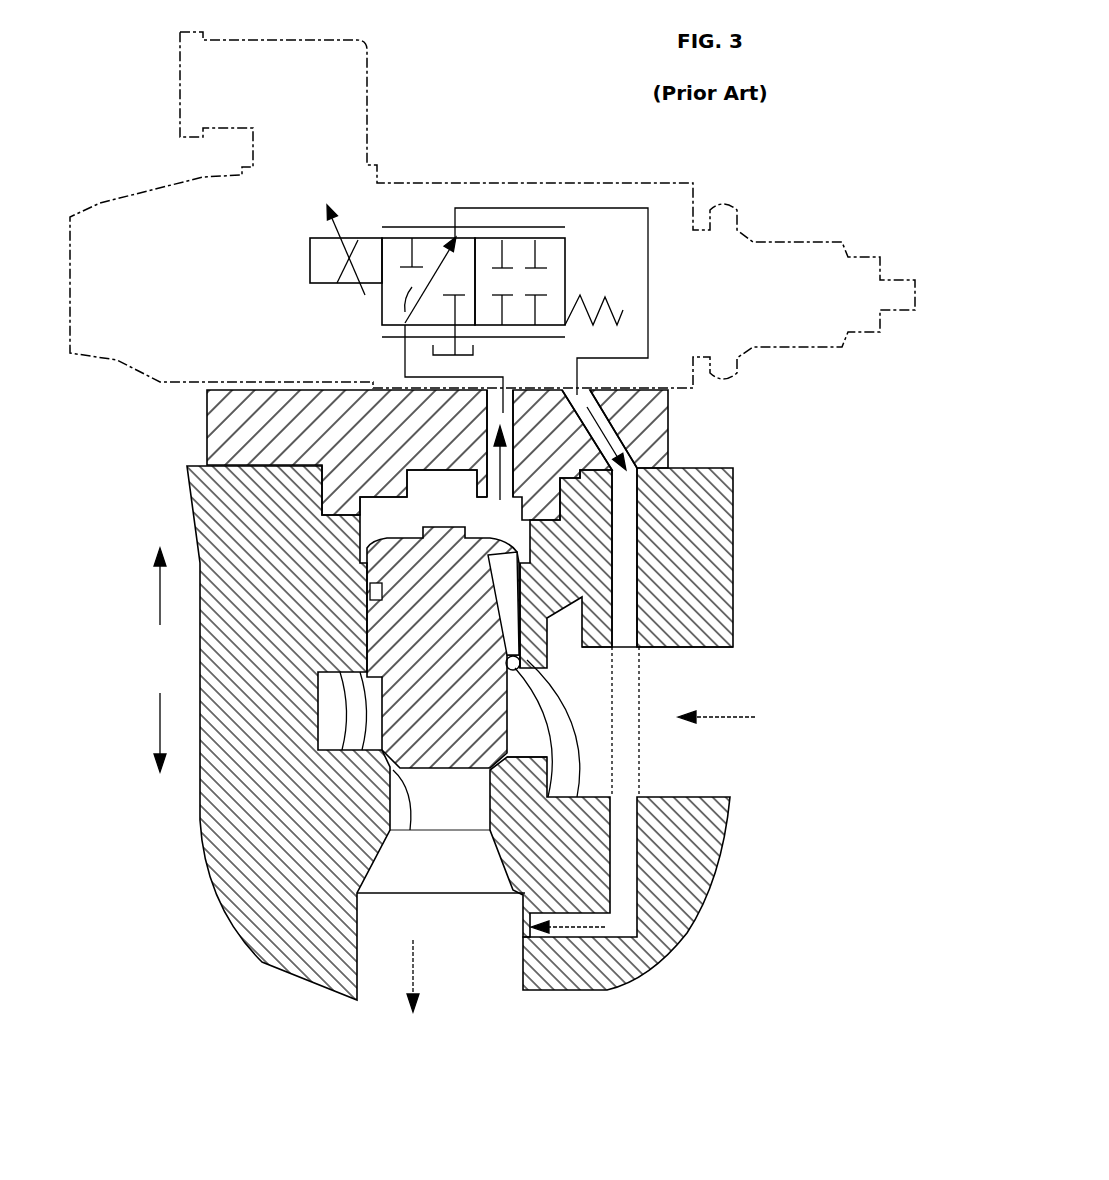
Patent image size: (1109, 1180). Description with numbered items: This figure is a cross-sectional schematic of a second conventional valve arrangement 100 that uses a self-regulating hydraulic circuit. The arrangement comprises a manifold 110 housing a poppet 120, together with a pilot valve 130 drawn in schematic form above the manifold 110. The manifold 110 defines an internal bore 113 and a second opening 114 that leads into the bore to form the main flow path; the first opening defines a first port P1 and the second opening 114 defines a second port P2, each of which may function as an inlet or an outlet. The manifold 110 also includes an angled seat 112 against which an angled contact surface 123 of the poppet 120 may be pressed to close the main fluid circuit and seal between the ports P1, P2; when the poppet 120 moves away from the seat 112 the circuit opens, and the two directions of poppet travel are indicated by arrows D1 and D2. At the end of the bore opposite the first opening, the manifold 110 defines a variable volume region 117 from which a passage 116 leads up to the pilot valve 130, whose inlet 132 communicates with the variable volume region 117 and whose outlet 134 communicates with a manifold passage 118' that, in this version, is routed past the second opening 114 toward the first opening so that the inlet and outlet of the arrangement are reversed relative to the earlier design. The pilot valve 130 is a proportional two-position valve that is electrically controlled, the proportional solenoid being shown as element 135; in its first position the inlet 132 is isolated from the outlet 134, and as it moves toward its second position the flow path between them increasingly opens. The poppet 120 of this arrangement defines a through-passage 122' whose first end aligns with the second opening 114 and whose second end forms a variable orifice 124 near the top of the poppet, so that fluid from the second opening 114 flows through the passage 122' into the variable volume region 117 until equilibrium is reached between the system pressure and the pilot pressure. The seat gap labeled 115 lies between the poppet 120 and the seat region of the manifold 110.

The valve arrangement 100 is at (760, 482).
The manifold 110 is at (283, 967).
The angled seat 112 is at (410, 830).
The internal bore 113 is at (368, 645).
The second opening 114 is at (522, 669).
The valve seat gap 115 is at (515, 577).
The passage 116 is at (496, 458).
The variable volume region 117 is at (456, 503).
The pilot passage 118' is at (666, 661).
The poppet 120 is at (460, 790).
The passage 122' is at (558, 728).
The angled contact surface 123 is at (500, 756).
The variable orifice 124 is at (492, 553).
The pilot valve 130 is at (425, 205).
The inlet 132 is at (498, 338).
The outlet 134 is at (532, 227).
The solenoid 135 is at (318, 280).
The first direction D1 is at (160, 607).
The second direction D2 is at (160, 735).
The first port P1 is at (736, 717).
The second port P2 is at (413, 959).